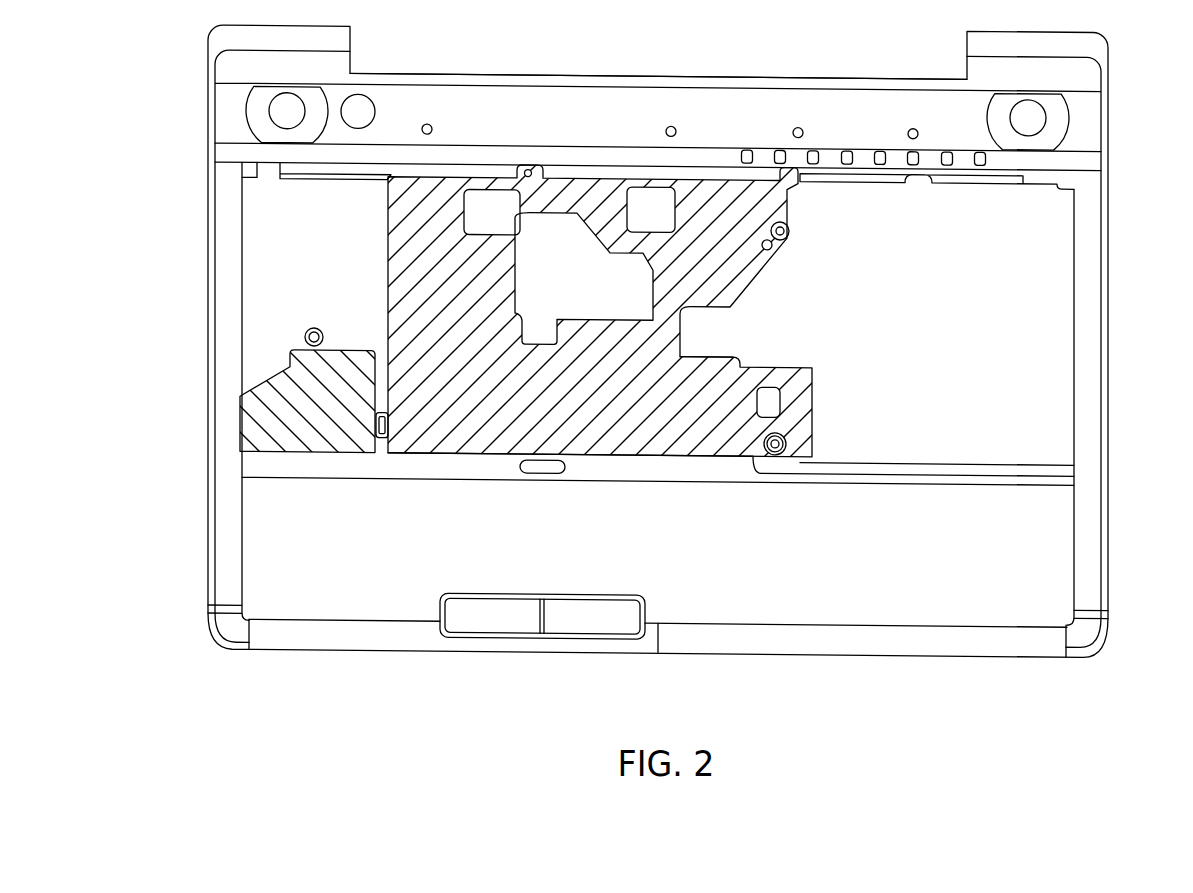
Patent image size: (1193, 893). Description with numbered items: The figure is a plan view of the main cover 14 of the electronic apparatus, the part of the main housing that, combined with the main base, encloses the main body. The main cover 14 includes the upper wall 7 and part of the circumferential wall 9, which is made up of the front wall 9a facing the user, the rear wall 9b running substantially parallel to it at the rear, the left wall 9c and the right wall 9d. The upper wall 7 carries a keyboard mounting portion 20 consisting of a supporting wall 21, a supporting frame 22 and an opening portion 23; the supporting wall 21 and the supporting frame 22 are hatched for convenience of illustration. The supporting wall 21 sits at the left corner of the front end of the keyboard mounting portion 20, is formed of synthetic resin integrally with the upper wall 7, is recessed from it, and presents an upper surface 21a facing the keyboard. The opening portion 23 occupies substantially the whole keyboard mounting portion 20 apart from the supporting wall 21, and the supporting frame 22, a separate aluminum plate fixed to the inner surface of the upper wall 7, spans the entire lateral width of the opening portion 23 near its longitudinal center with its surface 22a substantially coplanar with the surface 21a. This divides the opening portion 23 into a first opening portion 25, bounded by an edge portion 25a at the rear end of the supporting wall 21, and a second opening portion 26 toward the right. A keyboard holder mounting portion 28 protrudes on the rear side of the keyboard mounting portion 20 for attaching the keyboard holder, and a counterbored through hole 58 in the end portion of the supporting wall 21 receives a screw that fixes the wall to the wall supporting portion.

The upper wall 7 is at (396, 601).
The circumferential wall 9 is at (198, 578).
The front wall 9a is at (744, 652).
The rear wall 9b is at (818, 72).
The left wall 9c is at (208, 379).
The right wall 9d is at (1108, 372).
The main cover 14 is at (918, 634).
The keyboard mounting portion 20 is at (655, 440).
The supporting wall 21 is at (316, 451).
The surface 21a is at (375, 416).
The supporting frame 22 is at (487, 451).
The surface 22a is at (540, 404).
The opening portion 23 is at (961, 440).
The first opening portion 25 is at (253, 246).
The edge portion 25a is at (346, 349).
The second opening portion 26 is at (1055, 262).
The keyboard holder mounting portion 28 is at (582, 163).
The through hole 58 is at (305, 329).